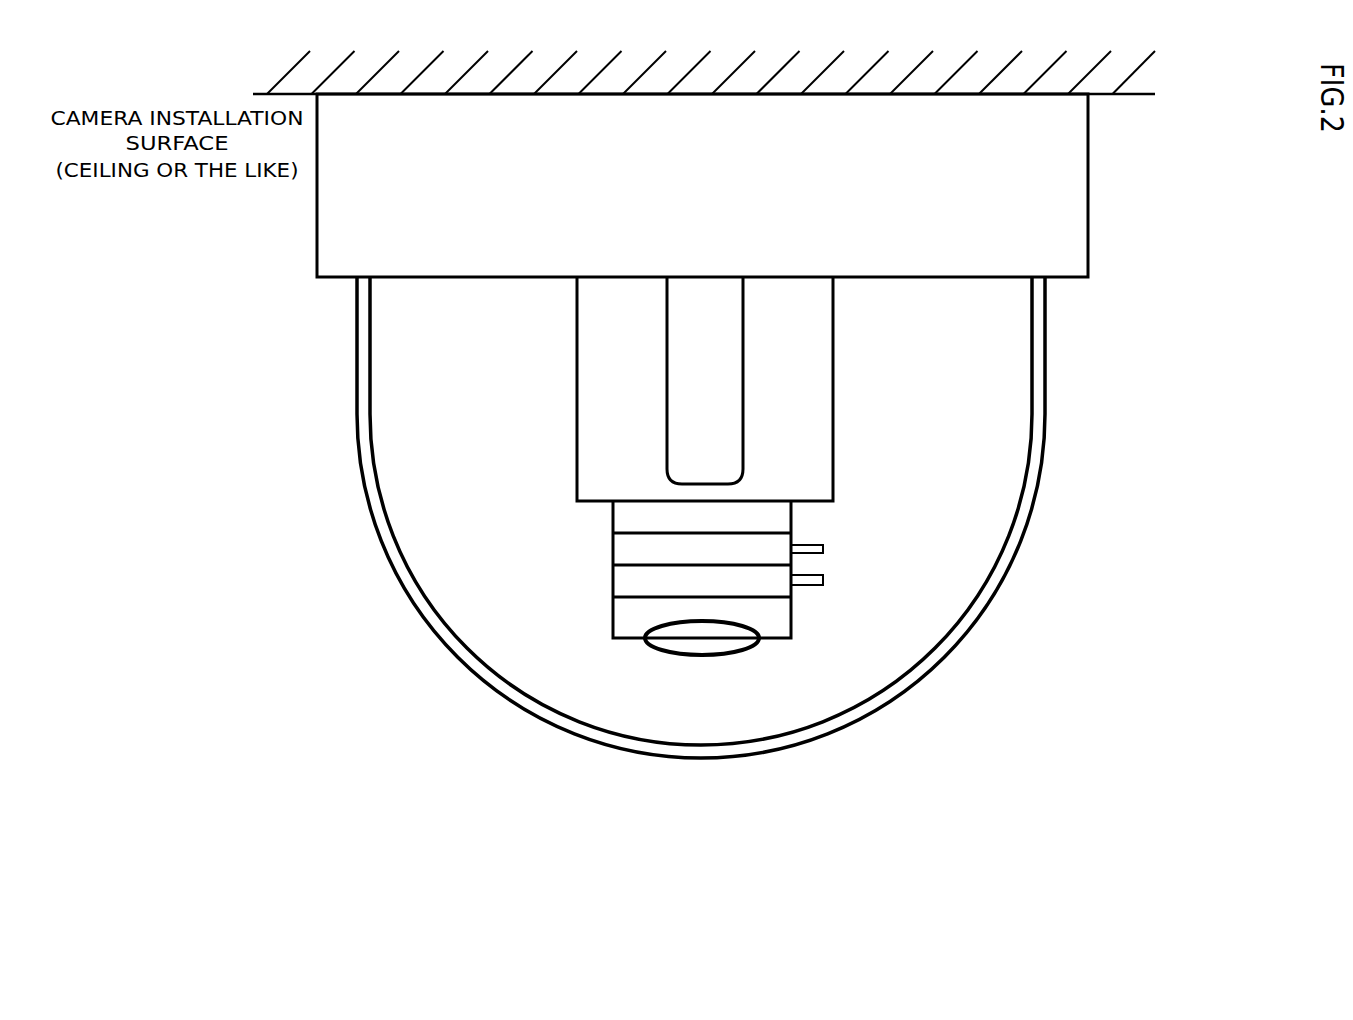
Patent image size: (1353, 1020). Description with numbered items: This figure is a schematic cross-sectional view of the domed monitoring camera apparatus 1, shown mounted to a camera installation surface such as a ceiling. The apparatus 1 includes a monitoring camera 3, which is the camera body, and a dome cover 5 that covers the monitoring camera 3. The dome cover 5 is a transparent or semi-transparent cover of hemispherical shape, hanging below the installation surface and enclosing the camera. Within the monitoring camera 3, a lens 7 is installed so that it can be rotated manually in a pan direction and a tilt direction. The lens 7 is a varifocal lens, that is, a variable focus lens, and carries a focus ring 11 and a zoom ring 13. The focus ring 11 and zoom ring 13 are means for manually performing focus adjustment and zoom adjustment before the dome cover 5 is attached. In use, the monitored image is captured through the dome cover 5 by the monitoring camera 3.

The domed monitoring camera apparatus 1 is at (1192, 187).
The monitoring camera 3 is at (552, 493).
The dome cover 5 is at (700, 760).
The lens 7 is at (727, 653).
The focus ring 11 is at (825, 580).
The zoom ring 13 is at (825, 549).